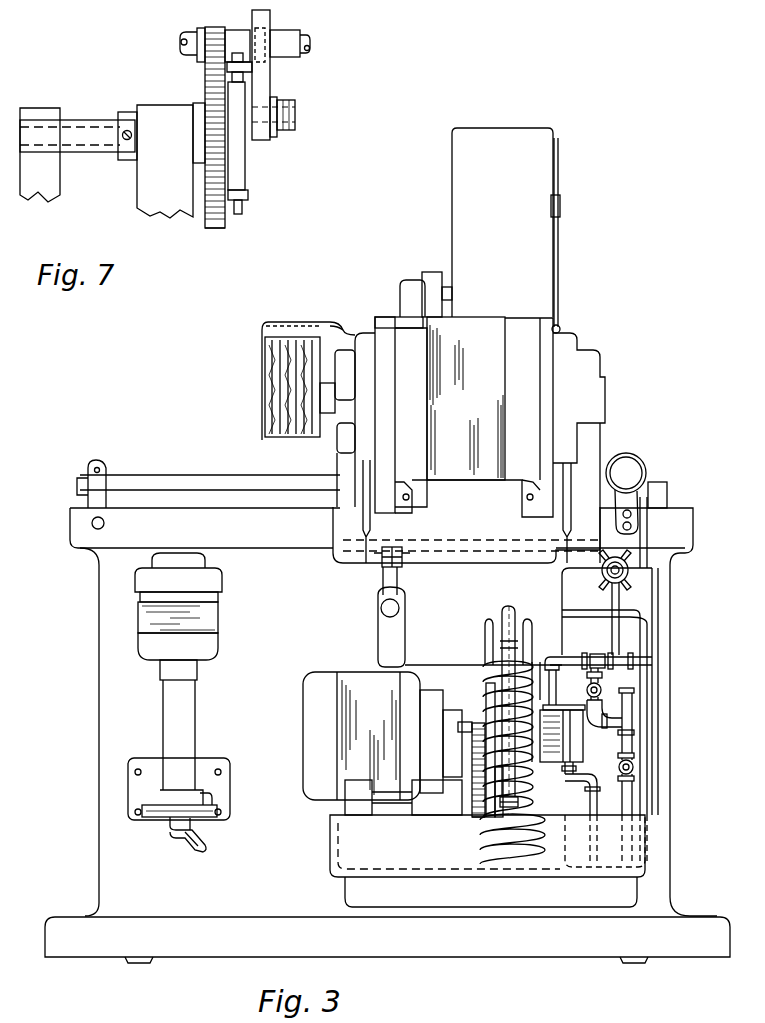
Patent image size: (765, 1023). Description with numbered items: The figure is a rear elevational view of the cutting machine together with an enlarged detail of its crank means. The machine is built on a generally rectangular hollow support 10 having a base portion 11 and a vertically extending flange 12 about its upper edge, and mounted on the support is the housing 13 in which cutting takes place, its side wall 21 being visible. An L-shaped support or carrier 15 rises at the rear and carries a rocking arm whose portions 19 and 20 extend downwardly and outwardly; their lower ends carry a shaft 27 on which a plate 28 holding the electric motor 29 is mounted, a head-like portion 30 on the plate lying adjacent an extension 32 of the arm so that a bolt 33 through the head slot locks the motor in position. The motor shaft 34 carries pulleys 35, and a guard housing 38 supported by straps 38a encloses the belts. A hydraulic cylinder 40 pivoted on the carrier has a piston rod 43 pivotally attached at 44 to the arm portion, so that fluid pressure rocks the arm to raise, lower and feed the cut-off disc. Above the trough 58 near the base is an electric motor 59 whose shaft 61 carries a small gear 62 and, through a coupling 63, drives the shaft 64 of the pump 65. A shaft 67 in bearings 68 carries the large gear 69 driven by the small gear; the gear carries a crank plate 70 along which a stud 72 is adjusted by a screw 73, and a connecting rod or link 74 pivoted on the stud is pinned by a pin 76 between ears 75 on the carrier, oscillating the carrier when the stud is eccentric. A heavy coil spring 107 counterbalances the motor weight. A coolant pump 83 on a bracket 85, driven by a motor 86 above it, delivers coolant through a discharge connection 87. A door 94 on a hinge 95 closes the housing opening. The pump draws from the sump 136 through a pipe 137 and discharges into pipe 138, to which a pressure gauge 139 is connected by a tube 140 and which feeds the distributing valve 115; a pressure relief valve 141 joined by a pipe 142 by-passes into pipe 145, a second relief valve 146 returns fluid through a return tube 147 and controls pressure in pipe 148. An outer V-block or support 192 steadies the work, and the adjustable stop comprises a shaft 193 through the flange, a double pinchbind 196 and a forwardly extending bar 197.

In FIG. 3, the hollow support 10 is at (75, 698).
In FIG. 3, the base portion 11 is at (727, 904).
In FIG. 3, the flange 12 is at (70, 520).
In FIG. 3, the housing 13 is at (440, 198).
In FIG. 3, the support or carrier 15 is at (458, 604).
In FIG. 3, the arm portion 19 is at (355, 450).
In FIG. 3, the arm portion 20 is at (600, 432).
In FIG. 3, the side wall 21 is at (452, 164).
In FIG. 3, the shaft 27 is at (492, 540).
In FIG. 3, the plate 28 is at (462, 514).
In FIG. 3, the electric motor 29 is at (520, 328).
In FIG. 3, the head-like portion 30 is at (432, 272).
In FIG. 3, the extension 32 is at (402, 296).
In FIG. 3, the bolt 33 is at (452, 290).
In FIG. 3, the shaft 34 is at (330, 400).
In FIG. 3, the pulleys 35 is at (270, 440).
In FIG. 3, the guard housing 38 is at (262, 345).
In FIG. 3, the straps 38a is at (310, 296).
In FIG. 3, the cylinder 40 is at (400, 640).
In FIG. 3, the piston rod 43 is at (398, 567).
In FIG. 3, the pivotal attachment 44 is at (400, 548).
In FIG. 3, the trough 58 is at (335, 832).
In FIG. 3, the electric motor 59 is at (305, 685).
In FIG. 7, the shaft 61 is at (180, 42).
In FIG. 3, the shaft 61 is at (470, 732).
In FIG. 7, the small gear 62 is at (212, 27).
In FIG. 3, the small gear 62 is at (468, 723).
In FIG. 7, the coupling 63 is at (270, 28).
In FIG. 3, the coupling 63 is at (488, 740).
In FIG. 7, the pump shaft 64 is at (310, 44).
In FIG. 3, the pump shaft 64 is at (545, 705).
In FIG. 3, the pump 65 is at (552, 752).
In FIG. 7, the shaft 67 is at (90, 120).
In FIG. 3, the shaft 67 is at (400, 806).
In FIG. 7, the bearings 68 is at (40, 196).
In FIG. 3, the bearings 68 is at (368, 808).
In FIG. 7, the large gear 69 is at (228, 228).
In FIG. 3, the large gear 69 is at (480, 817).
In FIG. 7, the crank plate 70 is at (236, 174).
In FIG. 3, the crank plate 70 is at (497, 815).
In FIG. 7, the stud 72 is at (295, 116).
In FIG. 3, the stud 72 is at (520, 800).
In FIG. 7, the screw 73 is at (248, 195).
In FIG. 3, the connecting rod or link 74 is at (512, 660).
In FIG. 3, the ears 75 is at (528, 625).
In FIG. 3, the pin 76 is at (485, 638).
In FIG. 3, the pump 83 is at (160, 812).
In FIG. 3, the bracket 85 is at (206, 765).
In FIG. 3, the motor 86 is at (215, 650).
In FIG. 3, the discharge connection 87 is at (195, 850).
In FIG. 3, the door 94 is at (560, 266).
In FIG. 3, the hinge 95 is at (562, 208).
In FIG. 3, the coil spring 107 is at (535, 870).
In FIG. 3, the distributing valve 115 is at (594, 580).
In FIG. 3, the sump 136 is at (608, 870).
In FIG. 3, the pipe 137 is at (634, 806).
In FIG. 3, the pipe 138 is at (574, 660).
In FIG. 3, the pressure gauge 139 is at (640, 465).
In FIG. 3, the tube 140 is at (655, 597).
In FIG. 3, the pressure relief valve 141 is at (601, 690).
In FIG. 3, the pipe 142 is at (602, 675).
In FIG. 3, the pipe 145 is at (588, 712).
In FIG. 3, the second relief valve 146 is at (634, 770).
In FIG. 3, the return tube 147 is at (632, 800).
In FIG. 3, the pipe 148 is at (634, 700).
In FIG. 3, the outer V-block or support 192 is at (667, 498).
In FIG. 3, the shaft 193 is at (94, 530).
In FIG. 3, the double pinchbind 196 is at (88, 498).
In FIG. 3, the bar 197 is at (170, 486).